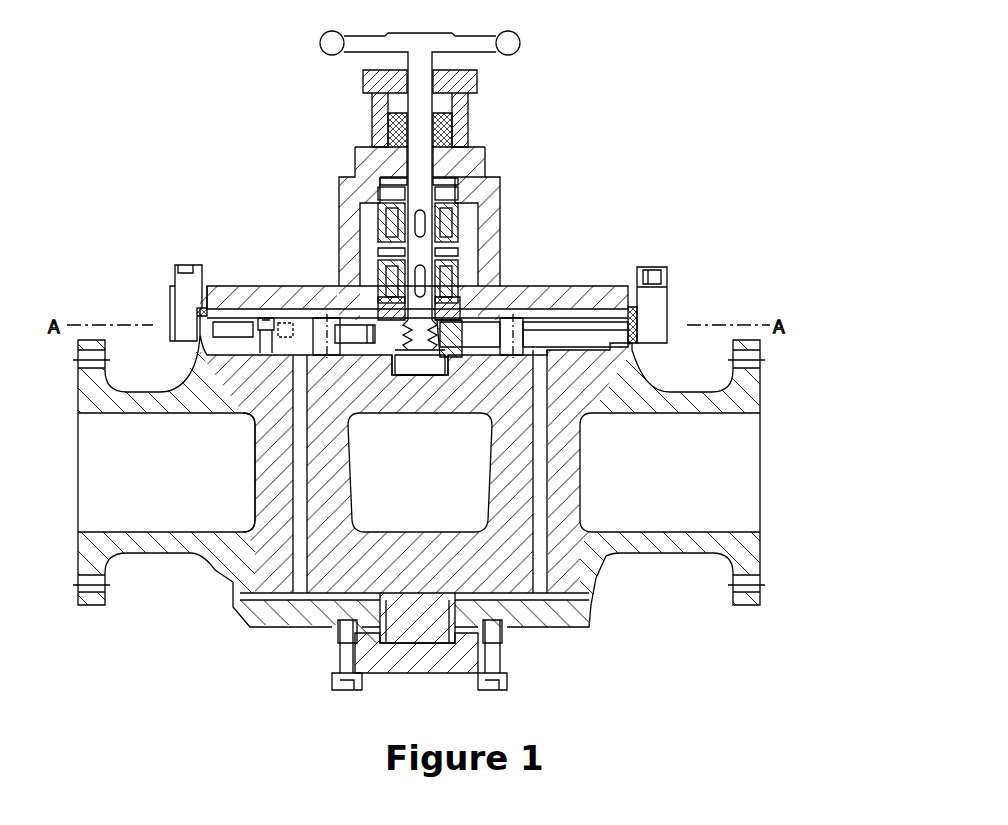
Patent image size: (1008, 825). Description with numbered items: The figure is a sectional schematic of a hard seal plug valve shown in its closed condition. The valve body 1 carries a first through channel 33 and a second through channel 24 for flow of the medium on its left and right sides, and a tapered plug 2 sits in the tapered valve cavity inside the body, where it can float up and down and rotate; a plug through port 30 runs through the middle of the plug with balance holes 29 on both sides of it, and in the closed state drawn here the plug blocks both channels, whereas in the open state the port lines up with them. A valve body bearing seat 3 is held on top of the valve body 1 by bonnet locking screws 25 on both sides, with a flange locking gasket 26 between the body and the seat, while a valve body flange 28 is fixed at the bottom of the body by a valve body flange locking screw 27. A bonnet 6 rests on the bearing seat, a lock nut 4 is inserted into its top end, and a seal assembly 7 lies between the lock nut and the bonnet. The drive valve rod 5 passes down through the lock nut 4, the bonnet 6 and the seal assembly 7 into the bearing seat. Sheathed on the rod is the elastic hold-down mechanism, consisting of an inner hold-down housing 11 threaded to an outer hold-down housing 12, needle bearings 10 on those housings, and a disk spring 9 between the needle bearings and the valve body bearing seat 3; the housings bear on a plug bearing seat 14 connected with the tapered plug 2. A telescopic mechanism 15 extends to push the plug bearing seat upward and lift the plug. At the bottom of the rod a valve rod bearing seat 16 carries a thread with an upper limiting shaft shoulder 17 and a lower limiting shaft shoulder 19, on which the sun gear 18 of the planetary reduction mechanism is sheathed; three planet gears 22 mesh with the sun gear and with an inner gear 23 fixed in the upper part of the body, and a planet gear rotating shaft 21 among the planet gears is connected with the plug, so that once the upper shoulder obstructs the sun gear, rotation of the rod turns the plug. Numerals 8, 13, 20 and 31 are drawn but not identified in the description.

The valve body 1 is at (150, 408).
The tapered plug 2 is at (243, 390).
The valve body bearing seat 3 is at (230, 298).
The lock nut 4 is at (373, 78).
The drive valve rod 5 is at (418, 247).
The bonnet 6 is at (377, 100).
The seal assembly 7 is at (362, 180).
The stuffing box ring 8 is at (392, 173).
The disk spring 9 is at (453, 190).
The needle bearings 10 is at (448, 201).
The inner hold-down housing 11 is at (440, 218).
The outer hold-down housing 12 is at (453, 223).
The spacer sleeve 13 is at (452, 242).
The plug bearing seat 14 is at (468, 250).
The telescopic mechanism 15 is at (443, 277).
The valve rod bearing seat 16 is at (423, 312).
The upper limiting shaft shoulder 17 is at (435, 323).
The sun gear 18 is at (448, 332).
The lower limiting shaft shoulder 19 is at (433, 347).
The stem seat 20 is at (430, 357).
The planet gear rotating shaft 21 is at (510, 330).
The planet gears 22 is at (535, 337).
The inner gear 23 is at (578, 330).
The second through channel 24 is at (700, 477).
The bonnet locking screws 25 is at (657, 303).
The flange locking gasket 26 is at (633, 311).
The valve body flange locking screw 27 is at (497, 682).
The valve body flange 28 is at (477, 668).
The balance holes 29 is at (539, 476).
The plug through port 30 is at (458, 477).
The bonnet stud 31 is at (267, 338).
The first through channel 33 is at (223, 475).